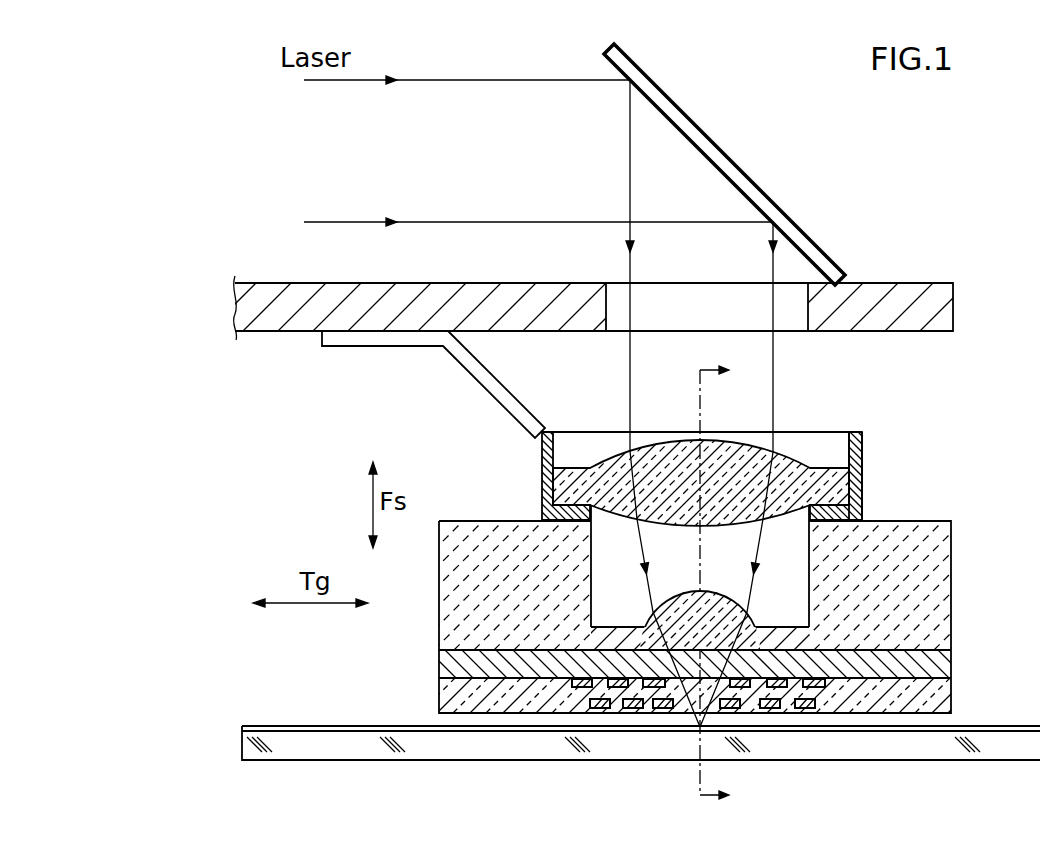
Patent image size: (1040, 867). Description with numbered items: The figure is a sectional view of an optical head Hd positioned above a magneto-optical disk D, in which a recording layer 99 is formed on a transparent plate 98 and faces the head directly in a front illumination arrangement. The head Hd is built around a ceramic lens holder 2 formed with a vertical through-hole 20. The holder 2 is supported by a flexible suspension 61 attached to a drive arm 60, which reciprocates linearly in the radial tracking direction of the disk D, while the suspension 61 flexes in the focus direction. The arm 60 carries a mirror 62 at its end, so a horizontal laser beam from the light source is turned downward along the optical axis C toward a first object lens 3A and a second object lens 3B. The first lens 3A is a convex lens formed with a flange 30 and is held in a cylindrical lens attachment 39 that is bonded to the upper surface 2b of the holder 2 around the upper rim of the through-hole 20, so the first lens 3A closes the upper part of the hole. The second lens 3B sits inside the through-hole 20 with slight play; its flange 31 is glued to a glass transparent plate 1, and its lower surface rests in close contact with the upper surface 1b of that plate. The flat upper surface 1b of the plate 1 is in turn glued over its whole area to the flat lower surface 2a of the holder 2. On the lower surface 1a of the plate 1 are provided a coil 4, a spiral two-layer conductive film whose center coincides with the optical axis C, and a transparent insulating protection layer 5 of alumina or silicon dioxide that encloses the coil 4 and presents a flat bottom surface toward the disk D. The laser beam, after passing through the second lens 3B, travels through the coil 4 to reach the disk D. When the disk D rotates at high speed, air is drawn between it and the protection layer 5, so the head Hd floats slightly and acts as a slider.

The mirror 62 is at (749, 178).
The drive arm 60 is at (552, 332).
The suspension 61 is at (492, 395).
The flange 30 is at (700, 444).
The lens attachment 39 is at (858, 477).
The first object lens 3A is at (791, 458).
The second object lens 3B is at (738, 608).
The lens holder 2 is at (667, 561).
The lower surface of the lens holder 2a is at (887, 648).
The upper surface of the lens holder 2b is at (880, 521).
The through-hole 20 is at (795, 548).
The flange 31 is at (630, 640).
The transparent plate 1 is at (707, 713).
The lower surface of the transparent plate 1a is at (877, 682).
The upper surface of the transparent plate 1b is at (775, 638).
The insulating protection layer 5 is at (940, 697).
The coil 4 is at (822, 688).
The transparent plate 98 is at (357, 760).
The recording layer 99 is at (360, 726).
The magneto-optical disk D is at (641, 725).
The optical head Hd is at (957, 427).
The optical axis C is at (712, 436).